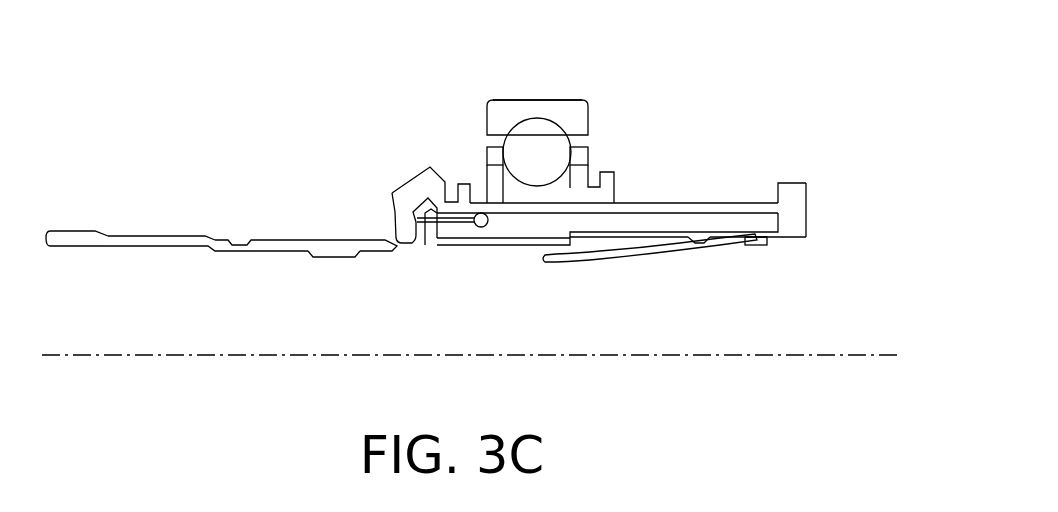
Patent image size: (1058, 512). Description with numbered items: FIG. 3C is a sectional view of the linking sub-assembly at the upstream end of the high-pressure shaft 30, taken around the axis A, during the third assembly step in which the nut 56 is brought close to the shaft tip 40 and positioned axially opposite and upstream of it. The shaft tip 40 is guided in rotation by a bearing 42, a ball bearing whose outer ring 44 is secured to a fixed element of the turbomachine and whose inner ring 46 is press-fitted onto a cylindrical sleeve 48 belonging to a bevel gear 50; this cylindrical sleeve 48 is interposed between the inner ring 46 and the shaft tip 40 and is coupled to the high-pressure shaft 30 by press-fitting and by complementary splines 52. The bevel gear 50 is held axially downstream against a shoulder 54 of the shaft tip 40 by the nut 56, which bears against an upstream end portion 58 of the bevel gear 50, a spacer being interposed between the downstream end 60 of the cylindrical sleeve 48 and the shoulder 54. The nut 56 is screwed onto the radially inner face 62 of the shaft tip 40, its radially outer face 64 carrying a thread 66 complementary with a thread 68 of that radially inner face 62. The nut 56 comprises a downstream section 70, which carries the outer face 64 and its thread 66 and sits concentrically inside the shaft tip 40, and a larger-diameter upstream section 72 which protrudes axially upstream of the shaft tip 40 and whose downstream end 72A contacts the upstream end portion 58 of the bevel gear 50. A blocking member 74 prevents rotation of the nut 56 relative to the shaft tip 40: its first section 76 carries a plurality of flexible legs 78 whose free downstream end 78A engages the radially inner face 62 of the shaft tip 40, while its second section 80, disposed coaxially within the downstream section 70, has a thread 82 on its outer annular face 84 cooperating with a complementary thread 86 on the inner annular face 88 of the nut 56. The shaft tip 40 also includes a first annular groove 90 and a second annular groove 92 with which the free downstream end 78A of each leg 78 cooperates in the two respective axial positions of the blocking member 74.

The high-pressure shaft 30 is at (818, 207).
The shaft tip 40 is at (798, 238).
The bearing 42 is at (590, 112).
The outer ring 44 is at (573, 100).
The inner ring 46 is at (473, 172).
The cylindrical sleeve 48 is at (635, 202).
The bevel gear 50 is at (395, 182).
The complementary splines 52 is at (533, 205).
The shoulder 54 is at (808, 190).
The nut 56 is at (100, 210).
The upstream end portion 58 is at (408, 230).
The downstream end 60 is at (735, 207).
The radially inner face 62 is at (618, 254).
The radially outer face 64 is at (240, 240).
The thread 66 is at (337, 240).
The thread 68 is at (473, 246).
The downstream section 70 is at (245, 262).
The upstream section 72 is at (108, 255).
The downstream end 72A is at (218, 238).
The blocking member 74 is at (655, 287).
The first section 76 is at (667, 274).
The flexible legs 78 is at (687, 259).
The free downstream end 78A is at (755, 246).
The second section 80 is at (562, 272).
The thread 82 is at (543, 255).
The outer annular face 84 is at (590, 263).
The complementary thread 86 is at (333, 256).
The inner annular face 88 is at (280, 252).
The first annular groove 90 is at (722, 207).
The second annular groove 92 is at (762, 239).
The axis A is at (50, 358).